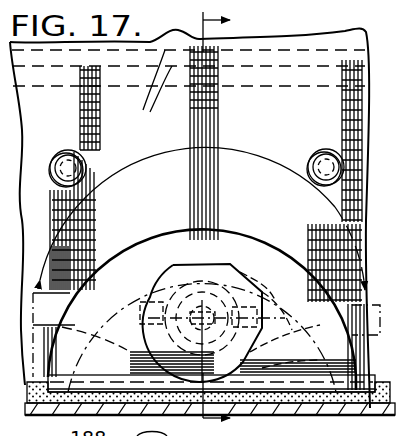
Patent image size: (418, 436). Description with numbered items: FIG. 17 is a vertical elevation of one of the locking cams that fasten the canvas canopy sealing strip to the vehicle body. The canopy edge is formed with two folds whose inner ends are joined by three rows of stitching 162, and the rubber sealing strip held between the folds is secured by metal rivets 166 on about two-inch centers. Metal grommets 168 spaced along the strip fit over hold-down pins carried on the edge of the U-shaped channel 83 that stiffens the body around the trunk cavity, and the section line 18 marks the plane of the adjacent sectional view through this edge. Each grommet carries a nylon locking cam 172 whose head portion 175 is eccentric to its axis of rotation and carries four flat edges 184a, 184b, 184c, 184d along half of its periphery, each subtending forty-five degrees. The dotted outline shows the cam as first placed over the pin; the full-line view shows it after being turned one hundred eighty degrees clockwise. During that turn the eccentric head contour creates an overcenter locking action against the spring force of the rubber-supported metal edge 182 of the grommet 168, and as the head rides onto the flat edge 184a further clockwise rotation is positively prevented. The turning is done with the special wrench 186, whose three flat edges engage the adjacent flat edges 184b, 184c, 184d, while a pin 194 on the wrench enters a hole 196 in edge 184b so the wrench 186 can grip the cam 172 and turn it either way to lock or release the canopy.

The section line 18- 18 is at (232, 221).
The U-shaped channel 83 is at (291, 410).
The rows of stitching 162 is at (142, 87).
The metal rivets 166 is at (68, 150).
The metal grommets 168 is at (130, 255).
The locking cam 172 is at (141, 315).
The head portion 175 is at (183, 270).
The rubber-supported metal edge 182 is at (335, 384).
The flat edge 184a is at (285, 366).
The flat edge 184b is at (252, 350).
The flat edge 184c is at (258, 297).
The flat edge 184d is at (240, 272).
The special wrench 186 is at (330, 244).
The pin 194 is at (260, 318).
The hole 196 is at (214, 323).